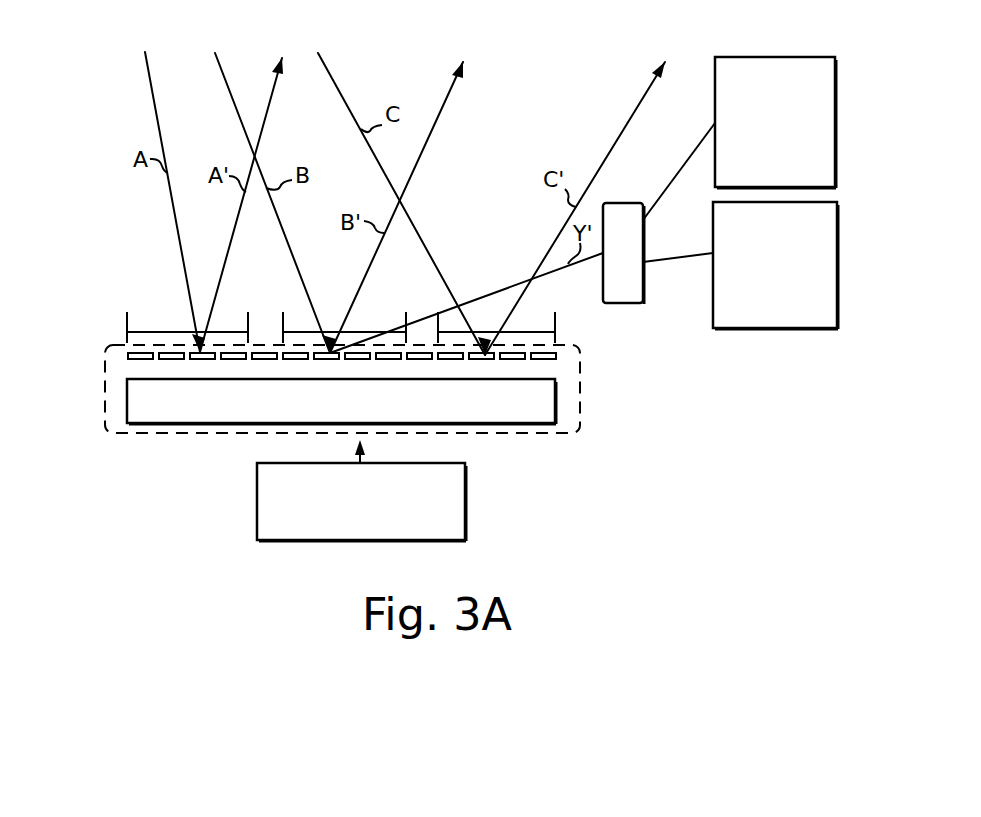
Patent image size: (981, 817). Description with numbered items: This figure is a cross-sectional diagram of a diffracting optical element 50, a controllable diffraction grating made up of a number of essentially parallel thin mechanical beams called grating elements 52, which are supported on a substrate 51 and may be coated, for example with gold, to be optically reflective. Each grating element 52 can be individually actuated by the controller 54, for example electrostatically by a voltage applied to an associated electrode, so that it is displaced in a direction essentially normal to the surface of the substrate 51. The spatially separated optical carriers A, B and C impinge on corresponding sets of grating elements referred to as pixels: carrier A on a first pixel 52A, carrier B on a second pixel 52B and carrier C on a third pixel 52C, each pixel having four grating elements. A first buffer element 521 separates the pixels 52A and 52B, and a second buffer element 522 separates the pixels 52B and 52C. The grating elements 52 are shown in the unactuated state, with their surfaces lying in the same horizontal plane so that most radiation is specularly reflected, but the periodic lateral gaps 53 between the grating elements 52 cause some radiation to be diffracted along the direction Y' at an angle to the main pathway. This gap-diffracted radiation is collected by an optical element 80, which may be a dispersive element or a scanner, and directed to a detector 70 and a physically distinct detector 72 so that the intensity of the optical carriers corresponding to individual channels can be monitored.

The diffracting optical element 50 is at (585, 347).
The substrate 51 is at (530, 425).
The grating elements 52 is at (128, 355).
The first buffer element 521 is at (262, 359).
The second buffer element 522 is at (410, 360).
The first pixel 52A is at (168, 332).
The second pixel 52B is at (367, 332).
The third pixel 52C is at (535, 332).
The lateral gaps 53 is at (157, 360).
The controller 54 is at (283, 541).
The detector 70 is at (797, 57).
The detector 72 is at (808, 330).
The optical element 80 is at (625, 305).